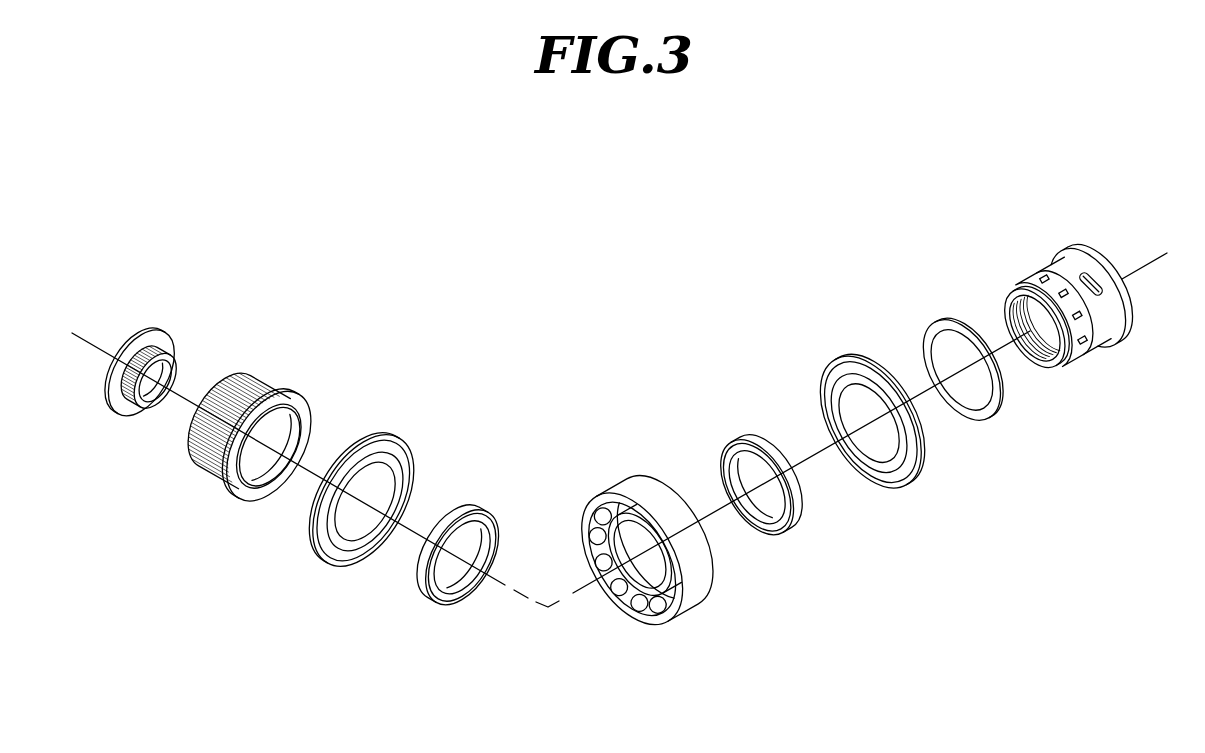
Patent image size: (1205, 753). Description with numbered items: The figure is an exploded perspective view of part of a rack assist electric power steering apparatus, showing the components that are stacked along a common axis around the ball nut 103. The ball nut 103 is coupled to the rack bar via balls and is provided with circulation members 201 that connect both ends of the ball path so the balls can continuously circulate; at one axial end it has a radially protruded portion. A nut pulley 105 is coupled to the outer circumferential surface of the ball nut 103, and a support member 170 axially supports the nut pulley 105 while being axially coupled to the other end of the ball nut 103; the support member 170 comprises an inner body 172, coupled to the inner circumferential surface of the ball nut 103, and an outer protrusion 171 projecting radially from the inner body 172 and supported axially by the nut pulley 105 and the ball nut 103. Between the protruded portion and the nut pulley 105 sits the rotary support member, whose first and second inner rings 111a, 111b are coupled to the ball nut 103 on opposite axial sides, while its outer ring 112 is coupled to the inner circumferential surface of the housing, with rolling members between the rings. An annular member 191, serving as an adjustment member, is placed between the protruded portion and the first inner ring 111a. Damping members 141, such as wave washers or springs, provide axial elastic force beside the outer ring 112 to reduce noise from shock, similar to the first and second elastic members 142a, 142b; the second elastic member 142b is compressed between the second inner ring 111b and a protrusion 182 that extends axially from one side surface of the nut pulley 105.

The ball nut 103 is at (1024, 259).
The nut pulley 105 is at (296, 359).
The first inner ring 111a is at (724, 419).
The second inner ring 111b is at (499, 478).
The outer ring 112 is at (703, 568).
The damping members 141 is at (320, 552).
The first elastic member 142a is at (883, 463).
The second elastic member 142b is at (348, 543).
The support member 170 is at (182, 297).
The outer protrusion 171 is at (150, 337).
The inner body 172 is at (127, 412).
The protrusion 182 is at (300, 408).
The annular member 191 is at (912, 296).
The circulation members 201 is at (1092, 280).